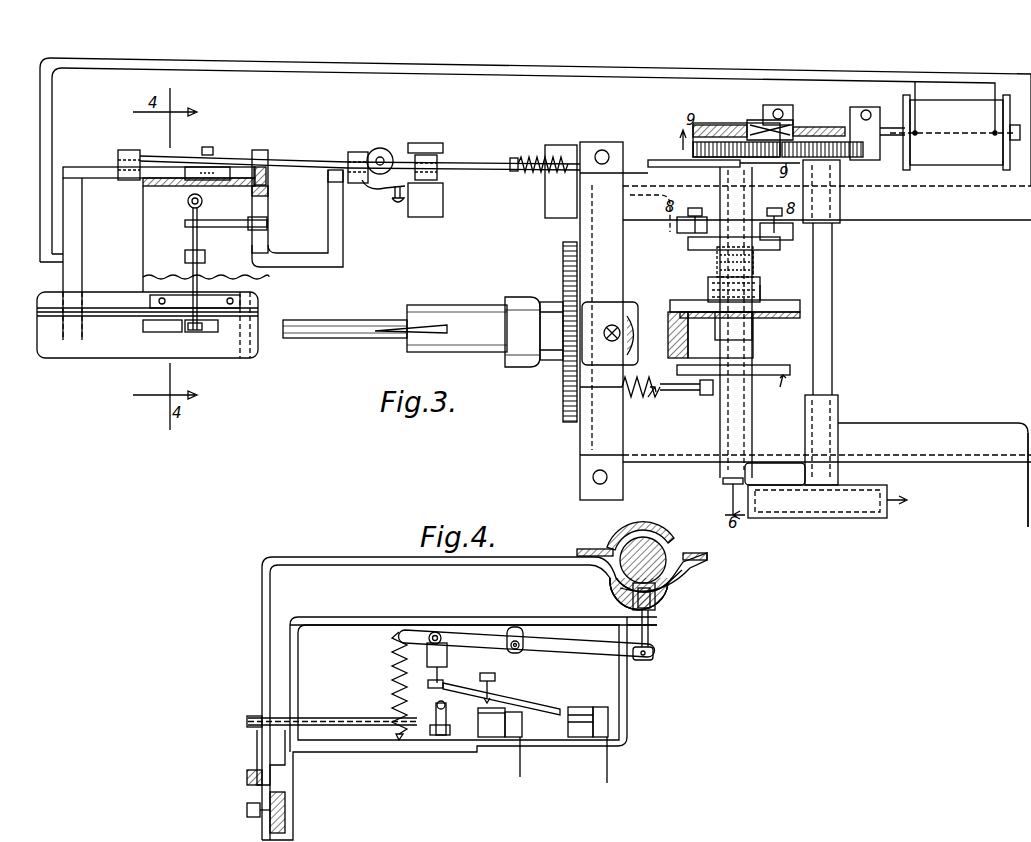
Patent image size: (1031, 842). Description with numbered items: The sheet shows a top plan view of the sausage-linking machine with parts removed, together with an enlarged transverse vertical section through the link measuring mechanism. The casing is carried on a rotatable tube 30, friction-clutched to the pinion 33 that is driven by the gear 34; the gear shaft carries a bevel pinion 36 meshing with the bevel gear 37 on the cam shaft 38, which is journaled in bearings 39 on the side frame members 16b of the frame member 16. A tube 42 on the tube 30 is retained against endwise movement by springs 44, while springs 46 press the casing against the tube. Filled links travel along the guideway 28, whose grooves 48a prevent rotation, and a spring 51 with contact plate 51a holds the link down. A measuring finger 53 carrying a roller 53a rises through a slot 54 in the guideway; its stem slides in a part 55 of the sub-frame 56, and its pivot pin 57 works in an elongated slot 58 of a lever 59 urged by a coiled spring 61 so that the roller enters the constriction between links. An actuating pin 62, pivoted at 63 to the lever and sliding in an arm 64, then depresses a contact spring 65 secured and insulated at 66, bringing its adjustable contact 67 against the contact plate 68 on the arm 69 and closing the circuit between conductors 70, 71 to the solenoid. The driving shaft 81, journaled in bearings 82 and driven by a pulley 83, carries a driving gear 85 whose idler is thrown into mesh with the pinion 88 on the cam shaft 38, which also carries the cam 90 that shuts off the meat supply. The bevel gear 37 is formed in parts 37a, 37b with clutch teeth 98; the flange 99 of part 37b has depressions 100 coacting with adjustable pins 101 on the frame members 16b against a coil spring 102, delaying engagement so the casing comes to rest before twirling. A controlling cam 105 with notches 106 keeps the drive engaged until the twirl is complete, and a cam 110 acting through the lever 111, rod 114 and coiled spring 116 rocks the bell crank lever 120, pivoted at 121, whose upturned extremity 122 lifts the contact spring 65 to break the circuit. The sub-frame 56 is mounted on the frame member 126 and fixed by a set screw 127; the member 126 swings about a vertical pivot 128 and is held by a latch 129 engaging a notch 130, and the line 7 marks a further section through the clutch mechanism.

In FIG. 3, the spring / section line 7- 7 is at (683, 394).
In FIG. 3, the frame member 16 is at (1022, 302).
In FIG. 3, the side frame members 16b is at (928, 200).
In FIG. 3, the guideway 28 is at (50, 352).
In FIG. 3, the tube 30 is at (345, 322).
In FIG. 3, the pinion 33 is at (548, 340).
In FIG. 3, the gear 34 is at (565, 395).
In FIG. 3, the bevel pinion 36 is at (656, 310).
In FIG. 3, the bevel gear 37 is at (778, 318).
In FIG. 3, the gear part 37a is at (762, 296).
In FIG. 3, the gear part 37b is at (755, 258).
In FIG. 3, the cam shaft 38 is at (740, 348).
In FIG. 3, the bearings 39 is at (687, 163).
In FIG. 3, the tube 42 is at (452, 307).
In FIG. 3, the springs 44 is at (518, 330).
In FIG. 3, the springs 46 is at (385, 325).
In FIG. 4, the longitudinally extending grooves 48a is at (690, 582).
In FIG. 4, the spring 51 is at (612, 548).
In FIG. 4, the contact plate 51a is at (672, 540).
In FIG. 3, the measuring finger 53 is at (212, 332).
In FIG. 4, the measuring finger 53 is at (657, 608).
In FIG. 3, the roller 53a is at (192, 334).
In FIG. 4, the roller 53a is at (637, 603).
In FIG. 3, the slot 54 is at (160, 330).
In FIG. 4, the slot 54 is at (668, 585).
In FIG. 4, the part of the sub-frame 55 is at (660, 625).
In FIG. 3, the sub-frame 56 is at (145, 187).
In FIG. 4, the sub-frame 56 is at (628, 737).
In FIG. 4, the pivot pin 57 is at (650, 660).
In FIG. 4, the elongated slot 58 is at (643, 662).
In FIG. 4, the lever 59 is at (575, 654).
In FIG. 4, the coiled spring 61 is at (392, 665).
In FIG. 4, the actuating pin 62 is at (447, 652).
In FIG. 4, the pivotal connection 63 is at (432, 632).
In FIG. 4, the arm 64 is at (395, 690).
In FIG. 4, the contact spring 65 is at (515, 695).
In FIG. 4, the securing point 66 is at (512, 628).
In FIG. 4, the adjustable contact 67 is at (492, 682).
In FIG. 4, the contact plate 68 is at (495, 712).
In FIG. 4, the arm 69 is at (487, 722).
In FIG. 4, the conductor 70 is at (520, 770).
In FIG. 4, the conductor 71 is at (607, 765).
In FIG. 3, the driving shaft 81 is at (833, 333).
In FIG. 3, the bearings 82 is at (838, 223).
In FIG. 3, the pulley 83 is at (836, 502).
In FIG. 3, the driving gear 85 is at (855, 160).
In FIG. 3, the pinion 88 is at (710, 124).
In FIG. 3, the cam 90 is at (785, 372).
In FIG. 3, the teeth 98 is at (715, 260).
In FIG. 3, the circular plate or flange 99 is at (685, 240).
In FIG. 3, the depressions 100 is at (782, 230).
In FIG. 3, the adjustable pins 101 is at (774, 214).
In FIG. 3, the coil spring 102 is at (708, 290).
In FIG. 3, the controlling cam 105 is at (700, 125).
In FIG. 3, the notches 106 is at (760, 125).
In FIG. 3, the cam 110 is at (705, 140).
In FIG. 3, the lever 111 is at (665, 145).
In FIG. 3, the rod 114 is at (475, 162).
In FIG. 3, the coiled spring 116 is at (535, 157).
In FIG. 3, the bell crank lever 120 is at (262, 160).
In FIG. 4, the bell crank lever 120 is at (257, 748).
In FIG. 3, the pivot 121 is at (262, 227).
In FIG. 4, the pivot 121 is at (312, 718).
In FIG. 4, the upturned extremity 122 is at (437, 720).
In FIG. 3, the frame member 126 is at (292, 188).
In FIG. 4, the frame member 126 is at (285, 822).
In FIG. 3, the set screw 127 is at (210, 147).
In FIG. 4, the set screw 127 is at (247, 810).
In FIG. 3, the vertical pivot 128 is at (385, 150).
In FIG. 3, the latch 129 is at (372, 192).
In FIG. 3, the notch 130 is at (398, 200).